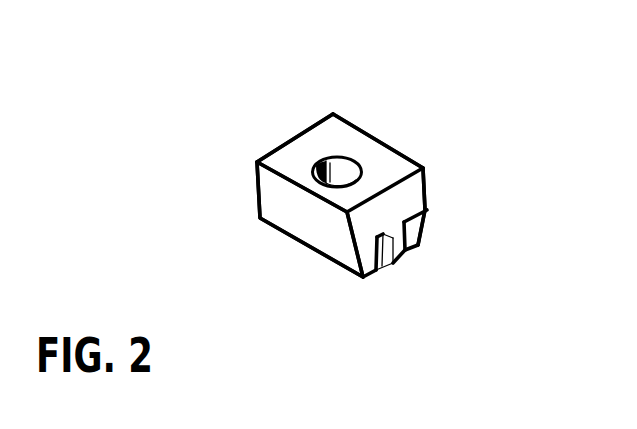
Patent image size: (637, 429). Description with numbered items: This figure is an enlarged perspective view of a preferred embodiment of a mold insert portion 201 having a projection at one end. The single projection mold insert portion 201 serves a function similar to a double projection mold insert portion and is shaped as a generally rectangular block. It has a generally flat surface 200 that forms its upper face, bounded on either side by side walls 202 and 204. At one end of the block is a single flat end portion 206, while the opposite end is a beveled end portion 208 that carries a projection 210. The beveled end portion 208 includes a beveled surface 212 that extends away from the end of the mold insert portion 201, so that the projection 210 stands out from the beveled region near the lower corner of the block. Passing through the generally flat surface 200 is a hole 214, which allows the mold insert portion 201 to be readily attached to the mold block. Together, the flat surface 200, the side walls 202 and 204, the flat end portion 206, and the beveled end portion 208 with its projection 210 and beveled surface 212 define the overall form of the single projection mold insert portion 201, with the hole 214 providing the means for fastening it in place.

The generally flat surface 200 is at (355, 137).
The single projection mold insert portion 201 is at (434, 187).
The side wall 202 is at (315, 225).
The side wall 204 is at (407, 157).
The single flat end portion 206 is at (284, 146).
The beveled end portion 208 is at (429, 227).
The projection 210 is at (403, 255).
The beveled surface 212 is at (378, 272).
The hole 214 is at (314, 172).